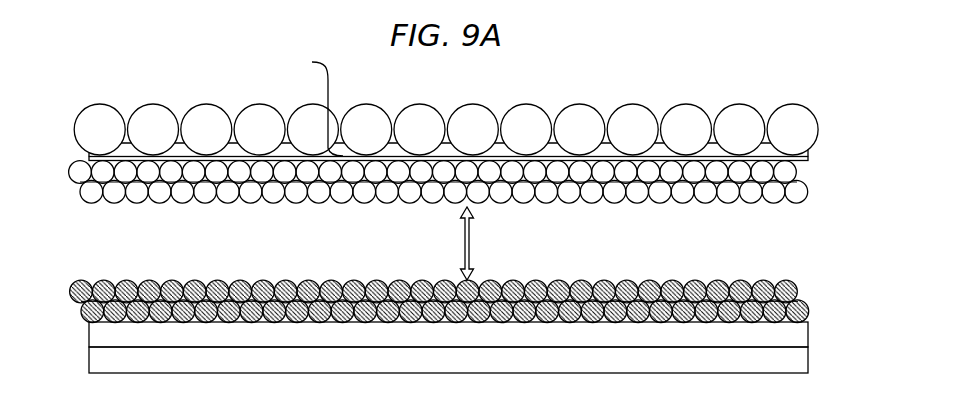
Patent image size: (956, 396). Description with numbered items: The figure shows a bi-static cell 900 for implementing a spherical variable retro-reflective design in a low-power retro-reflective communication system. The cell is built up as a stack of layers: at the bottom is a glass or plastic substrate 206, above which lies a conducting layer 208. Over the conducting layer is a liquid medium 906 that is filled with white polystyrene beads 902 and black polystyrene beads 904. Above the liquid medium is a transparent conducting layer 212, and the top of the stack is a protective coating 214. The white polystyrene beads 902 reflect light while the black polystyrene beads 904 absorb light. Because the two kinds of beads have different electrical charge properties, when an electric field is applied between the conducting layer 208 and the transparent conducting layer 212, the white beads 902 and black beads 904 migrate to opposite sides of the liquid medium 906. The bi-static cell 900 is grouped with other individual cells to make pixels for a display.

The bi-static cell 900 is at (527, 98).
The protective coating 214 is at (693, 112).
The transparent conducting layer 212 is at (89, 156).
The white polystyrene beads 902 is at (84, 203).
The black polystyrene beads 904 is at (72, 284).
The liquid medium 906 is at (280, 256).
The conducting layer 208 is at (89, 333).
The glass or plastic substrate 206 is at (89, 360).